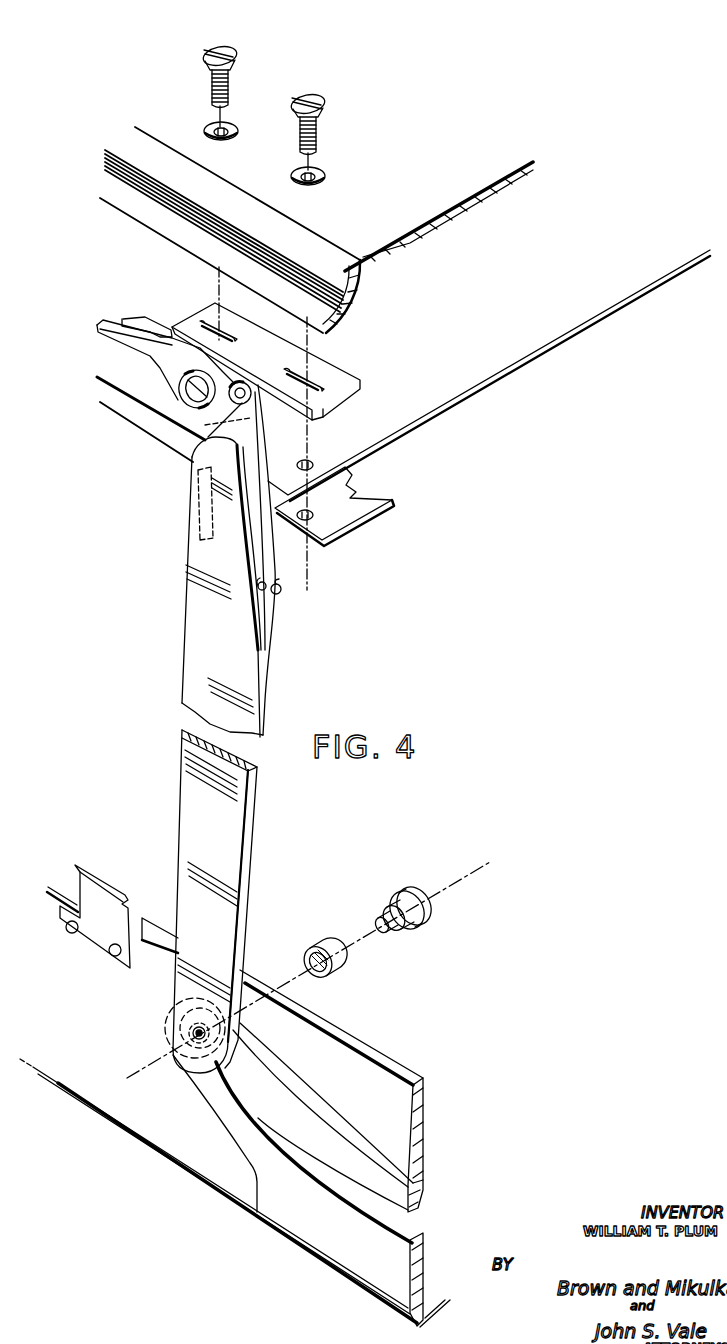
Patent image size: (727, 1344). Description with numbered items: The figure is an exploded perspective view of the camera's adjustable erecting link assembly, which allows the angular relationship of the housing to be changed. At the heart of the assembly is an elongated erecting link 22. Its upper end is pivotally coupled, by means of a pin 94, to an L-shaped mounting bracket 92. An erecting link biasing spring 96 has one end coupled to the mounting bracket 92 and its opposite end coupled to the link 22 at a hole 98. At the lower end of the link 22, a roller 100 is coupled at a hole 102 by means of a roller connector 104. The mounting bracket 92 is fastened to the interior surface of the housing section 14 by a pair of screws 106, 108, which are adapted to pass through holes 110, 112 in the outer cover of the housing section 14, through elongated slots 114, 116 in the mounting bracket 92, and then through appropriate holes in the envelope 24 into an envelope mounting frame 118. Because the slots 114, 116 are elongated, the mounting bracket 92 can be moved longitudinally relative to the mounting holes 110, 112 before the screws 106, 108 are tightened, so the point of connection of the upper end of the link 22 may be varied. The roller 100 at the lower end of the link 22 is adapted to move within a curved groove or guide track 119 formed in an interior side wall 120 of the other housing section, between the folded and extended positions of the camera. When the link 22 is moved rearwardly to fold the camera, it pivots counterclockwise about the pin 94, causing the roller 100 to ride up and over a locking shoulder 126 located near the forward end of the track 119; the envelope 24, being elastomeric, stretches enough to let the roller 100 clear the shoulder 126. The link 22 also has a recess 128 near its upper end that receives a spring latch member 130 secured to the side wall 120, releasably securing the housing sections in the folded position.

The housing section 14 is at (402, 171).
The erecting link 22 is at (200, 527).
The envelope 24 is at (482, 338).
The mounting bracket 92 is at (272, 350).
The pin 94 is at (250, 392).
The erecting link biasing spring 96 is at (178, 391).
The hole 98 is at (264, 581).
The roller 100 is at (308, 948).
The hole 102 is at (208, 1028).
The roller connector 104 is at (420, 889).
The screw 106 is at (234, 58).
The screw 108 is at (318, 103).
The hole 110 is at (225, 132).
The hole 112 is at (314, 177).
The elongated slot 114 is at (209, 325).
The elongated slot 116 is at (293, 370).
The envelope mounting frame 118 is at (357, 502).
The guide track 119 is at (328, 1165).
The interior side wall 120 is at (162, 1140).
The locking shoulder 126 is at (193, 1058).
The recess 128 is at (198, 500).
The spring latch member 130 is at (76, 875).